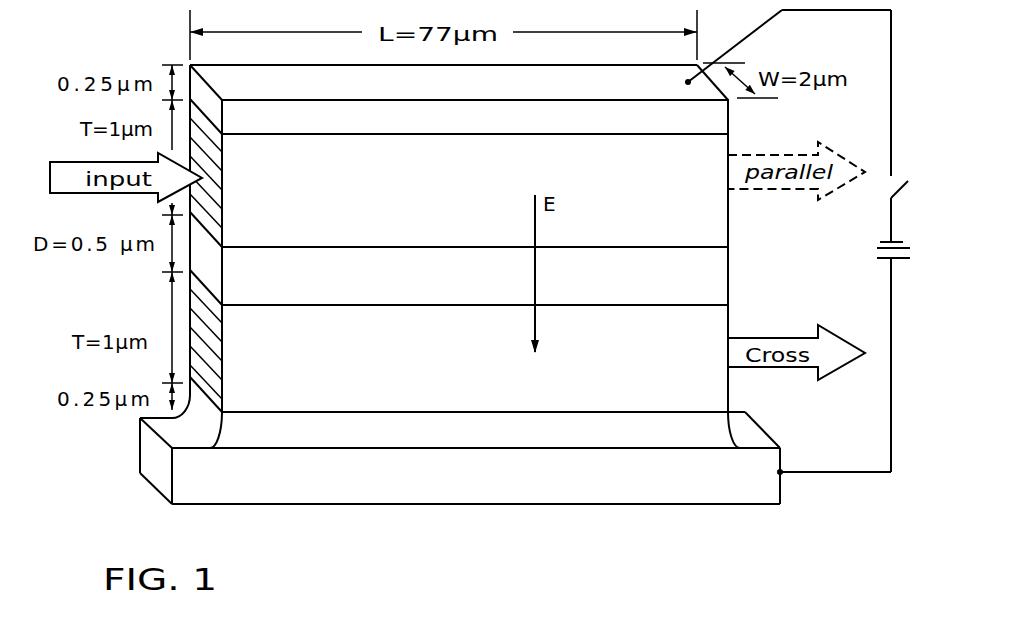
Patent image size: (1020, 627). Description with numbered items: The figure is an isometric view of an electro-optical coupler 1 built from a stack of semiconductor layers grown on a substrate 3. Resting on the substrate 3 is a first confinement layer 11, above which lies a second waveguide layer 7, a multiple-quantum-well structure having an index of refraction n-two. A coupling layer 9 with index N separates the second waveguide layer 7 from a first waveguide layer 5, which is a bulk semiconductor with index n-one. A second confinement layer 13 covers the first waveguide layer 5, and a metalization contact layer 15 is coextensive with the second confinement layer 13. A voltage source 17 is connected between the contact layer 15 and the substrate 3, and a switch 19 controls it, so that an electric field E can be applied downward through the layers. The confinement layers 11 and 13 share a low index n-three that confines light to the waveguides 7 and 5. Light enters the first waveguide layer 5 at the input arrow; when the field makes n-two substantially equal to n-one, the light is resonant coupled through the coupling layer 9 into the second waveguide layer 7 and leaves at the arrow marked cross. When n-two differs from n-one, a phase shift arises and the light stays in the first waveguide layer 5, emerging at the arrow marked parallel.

The coupler 1 is at (817, 249).
The substrate 3 is at (757, 492).
The first waveguide layer 5 is at (710, 228).
The second waveguide layer 7 is at (705, 390).
The coupling layer 9 is at (710, 283).
The first confinement layer 11 is at (712, 427).
The second confinement layer 13 is at (712, 120).
The metalization contact layer 15 is at (593, 77).
The voltage source 17 is at (881, 260).
The switch 19 is at (888, 188).